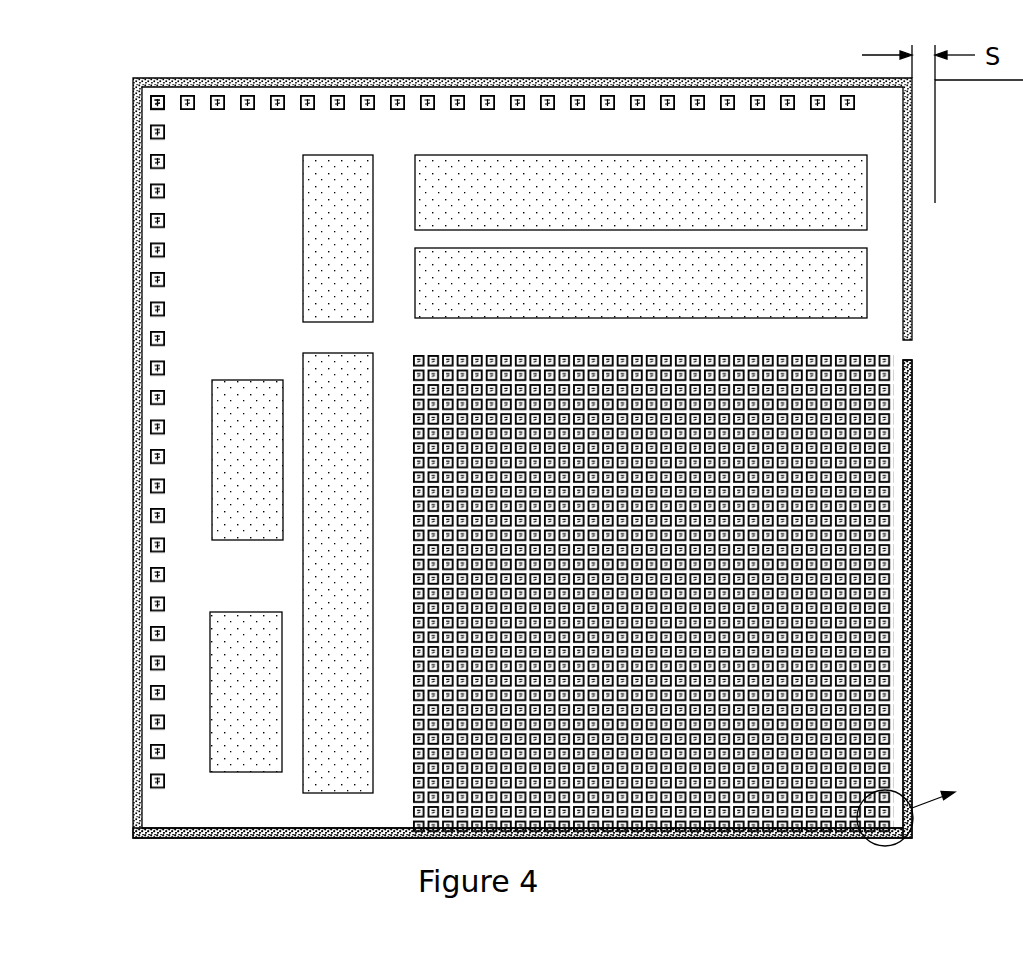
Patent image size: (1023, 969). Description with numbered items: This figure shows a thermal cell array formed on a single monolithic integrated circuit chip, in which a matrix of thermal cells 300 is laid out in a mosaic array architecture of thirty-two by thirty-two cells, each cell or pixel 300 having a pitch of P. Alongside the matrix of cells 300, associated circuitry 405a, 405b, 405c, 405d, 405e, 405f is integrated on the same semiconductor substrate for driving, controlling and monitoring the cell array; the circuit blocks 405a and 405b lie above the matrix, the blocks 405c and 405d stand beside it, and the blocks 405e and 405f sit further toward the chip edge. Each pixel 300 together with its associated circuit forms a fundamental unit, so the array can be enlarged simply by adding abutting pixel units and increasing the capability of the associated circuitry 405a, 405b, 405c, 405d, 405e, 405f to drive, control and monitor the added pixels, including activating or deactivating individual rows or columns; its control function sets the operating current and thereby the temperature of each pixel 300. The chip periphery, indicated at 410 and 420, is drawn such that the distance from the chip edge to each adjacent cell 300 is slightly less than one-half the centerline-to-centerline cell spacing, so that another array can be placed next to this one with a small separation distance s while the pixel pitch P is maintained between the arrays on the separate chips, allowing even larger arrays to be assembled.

The thermal cell 300 is at (898, 368).
The associated circuitry 405a is at (753, 158).
The associated circuitry 405b is at (752, 320).
The associated circuitry 405c is at (303, 181).
The associated circuitry 405d is at (303, 357).
The associated circuitry 405e is at (212, 400).
The associated circuitry 405f is at (230, 591).
The edge seal ring 410 is at (905, 456).
The scribe line 420 is at (722, 840).